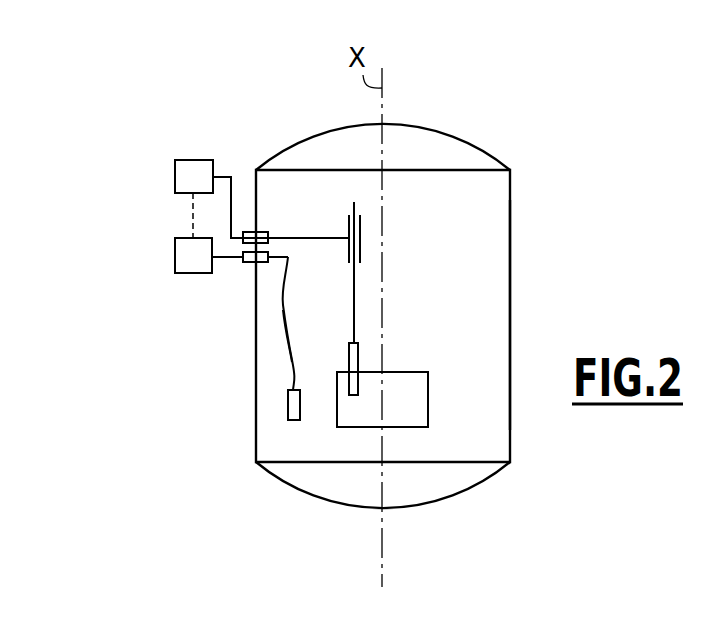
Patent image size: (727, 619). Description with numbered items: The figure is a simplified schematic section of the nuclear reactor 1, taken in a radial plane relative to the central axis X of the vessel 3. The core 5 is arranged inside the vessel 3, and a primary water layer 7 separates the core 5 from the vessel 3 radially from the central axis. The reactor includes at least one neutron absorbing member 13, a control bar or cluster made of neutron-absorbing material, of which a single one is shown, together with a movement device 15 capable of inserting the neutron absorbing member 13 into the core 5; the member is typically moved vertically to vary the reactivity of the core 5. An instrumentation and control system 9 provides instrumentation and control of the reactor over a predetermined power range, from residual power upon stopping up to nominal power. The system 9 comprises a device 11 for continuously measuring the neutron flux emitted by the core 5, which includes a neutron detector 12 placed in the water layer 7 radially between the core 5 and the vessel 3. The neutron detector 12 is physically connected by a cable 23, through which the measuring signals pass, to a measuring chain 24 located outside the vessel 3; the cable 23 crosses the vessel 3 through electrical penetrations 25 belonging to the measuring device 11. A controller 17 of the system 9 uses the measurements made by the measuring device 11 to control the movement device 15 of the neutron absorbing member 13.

The nuclear reactor 1 is at (512, 122).
The vessel 3 is at (510, 285).
The core 5 is at (428, 415).
The primary water layer 7 is at (307, 336).
The instrumentation and control system 9 is at (102, 420).
The device for continuously measuring the neutron flux 11 is at (232, 326).
The neutron detector 12 is at (291, 420).
The neutron absorbing member 13 is at (360, 358).
The movement device 15 is at (360, 245).
The controller 17 is at (190, 160).
The cable 23 is at (285, 302).
The measuring chain 24 is at (175, 255).
The electrical penetration 25 is at (247, 264).